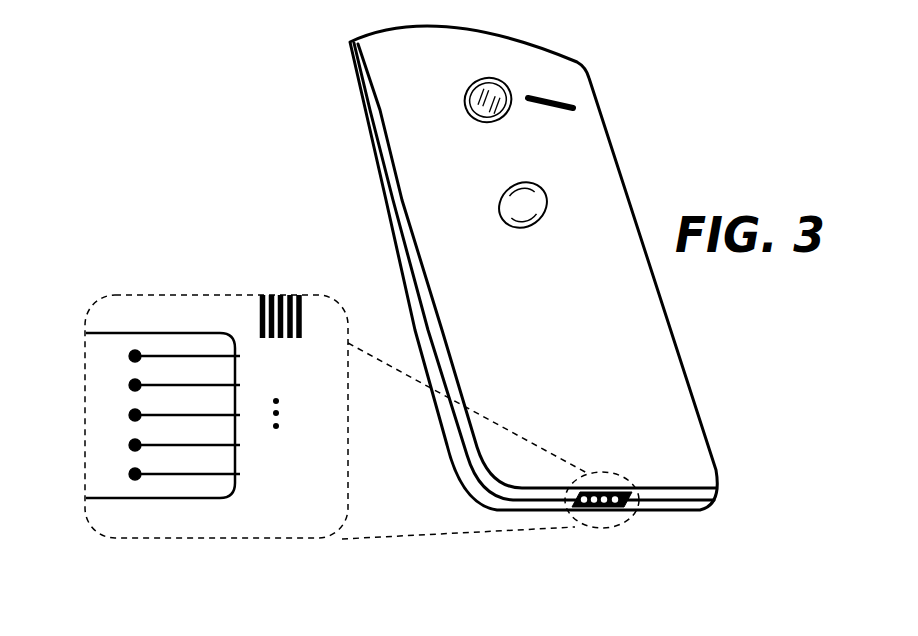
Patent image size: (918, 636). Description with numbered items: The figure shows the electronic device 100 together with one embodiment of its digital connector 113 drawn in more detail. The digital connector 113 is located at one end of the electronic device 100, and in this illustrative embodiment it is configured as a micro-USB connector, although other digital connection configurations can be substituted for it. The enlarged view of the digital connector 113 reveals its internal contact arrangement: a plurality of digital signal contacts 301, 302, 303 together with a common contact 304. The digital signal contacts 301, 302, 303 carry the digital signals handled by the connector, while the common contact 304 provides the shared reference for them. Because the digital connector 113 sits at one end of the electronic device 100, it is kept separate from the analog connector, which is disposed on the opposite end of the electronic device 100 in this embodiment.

The electronic device 100 is at (639, 149).
The digital connector 113 is at (598, 507).
The digital signal contact 301 is at (130, 356).
The digital signal contact 302 is at (130, 385).
The digital signal contact 303 is at (130, 415).
The common contact 304 is at (130, 474).